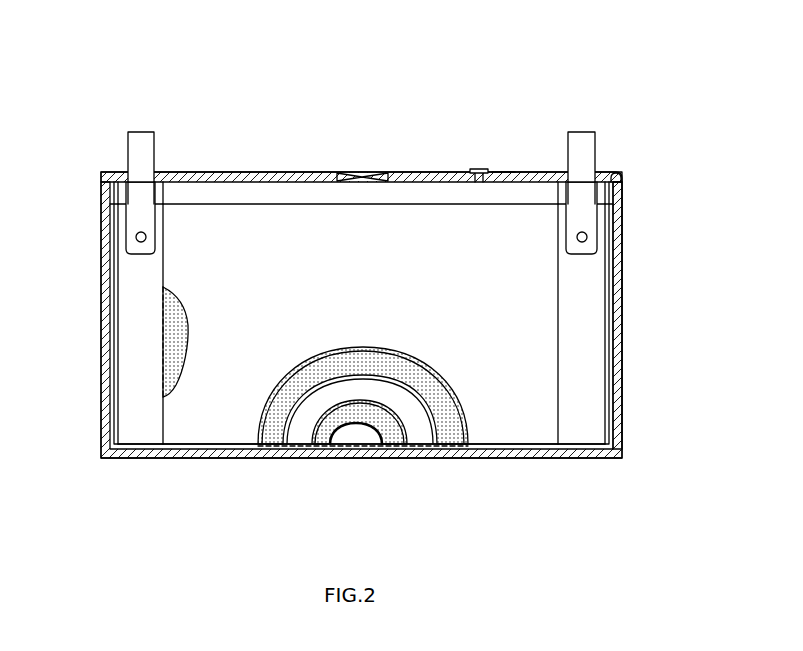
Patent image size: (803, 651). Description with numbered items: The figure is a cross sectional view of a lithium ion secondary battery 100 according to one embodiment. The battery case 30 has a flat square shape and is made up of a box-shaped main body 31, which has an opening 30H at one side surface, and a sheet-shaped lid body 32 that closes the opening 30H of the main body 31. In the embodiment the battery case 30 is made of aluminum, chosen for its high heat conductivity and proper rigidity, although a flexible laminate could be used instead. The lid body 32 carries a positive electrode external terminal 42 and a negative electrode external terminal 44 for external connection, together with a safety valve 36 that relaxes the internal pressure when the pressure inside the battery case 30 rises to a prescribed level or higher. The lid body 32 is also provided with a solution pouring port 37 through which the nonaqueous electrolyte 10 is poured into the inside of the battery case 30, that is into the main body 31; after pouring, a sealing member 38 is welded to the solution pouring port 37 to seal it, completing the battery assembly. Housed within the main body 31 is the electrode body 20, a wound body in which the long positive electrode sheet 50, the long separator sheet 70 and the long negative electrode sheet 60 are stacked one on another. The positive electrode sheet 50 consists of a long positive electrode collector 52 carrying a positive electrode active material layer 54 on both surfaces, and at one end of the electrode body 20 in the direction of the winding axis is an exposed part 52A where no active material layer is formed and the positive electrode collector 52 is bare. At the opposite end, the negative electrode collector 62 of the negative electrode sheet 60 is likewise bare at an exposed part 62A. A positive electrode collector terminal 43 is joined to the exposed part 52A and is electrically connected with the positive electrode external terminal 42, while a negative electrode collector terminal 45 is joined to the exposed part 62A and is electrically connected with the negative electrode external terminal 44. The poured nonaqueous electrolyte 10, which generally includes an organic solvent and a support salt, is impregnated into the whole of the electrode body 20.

The lithium ion secondary battery 100 is at (435, 95).
The nonaqueous electrolyte 10 is at (609, 437).
The electrode body 20 is at (283, 203).
The battery case 30 is at (624, 282).
The opening 30H is at (611, 176).
The main body 31 is at (620, 311).
The lid body 32 is at (606, 170).
The safety valve 36 is at (372, 172).
The solution pouring port 37 is at (502, 171).
The sealing member 38 is at (480, 168).
The positive electrode external terminal 42 is at (143, 131).
The positive electrode collector terminal 43 is at (137, 198).
The negative electrode external terminal 44 is at (584, 131).
The negative electrode collector terminal 45 is at (587, 199).
The positive electrode sheet 50 is at (270, 444).
The positive electrode collector 52 is at (117, 348).
The exposed part 52A is at (130, 416).
The positive electrode active material layer 54 is at (188, 321).
The negative electrode sheet 60 is at (334, 440).
The negative electrode collector 62 is at (604, 350).
The exposed part 62A is at (590, 394).
The separator sheet 70 is at (205, 396).